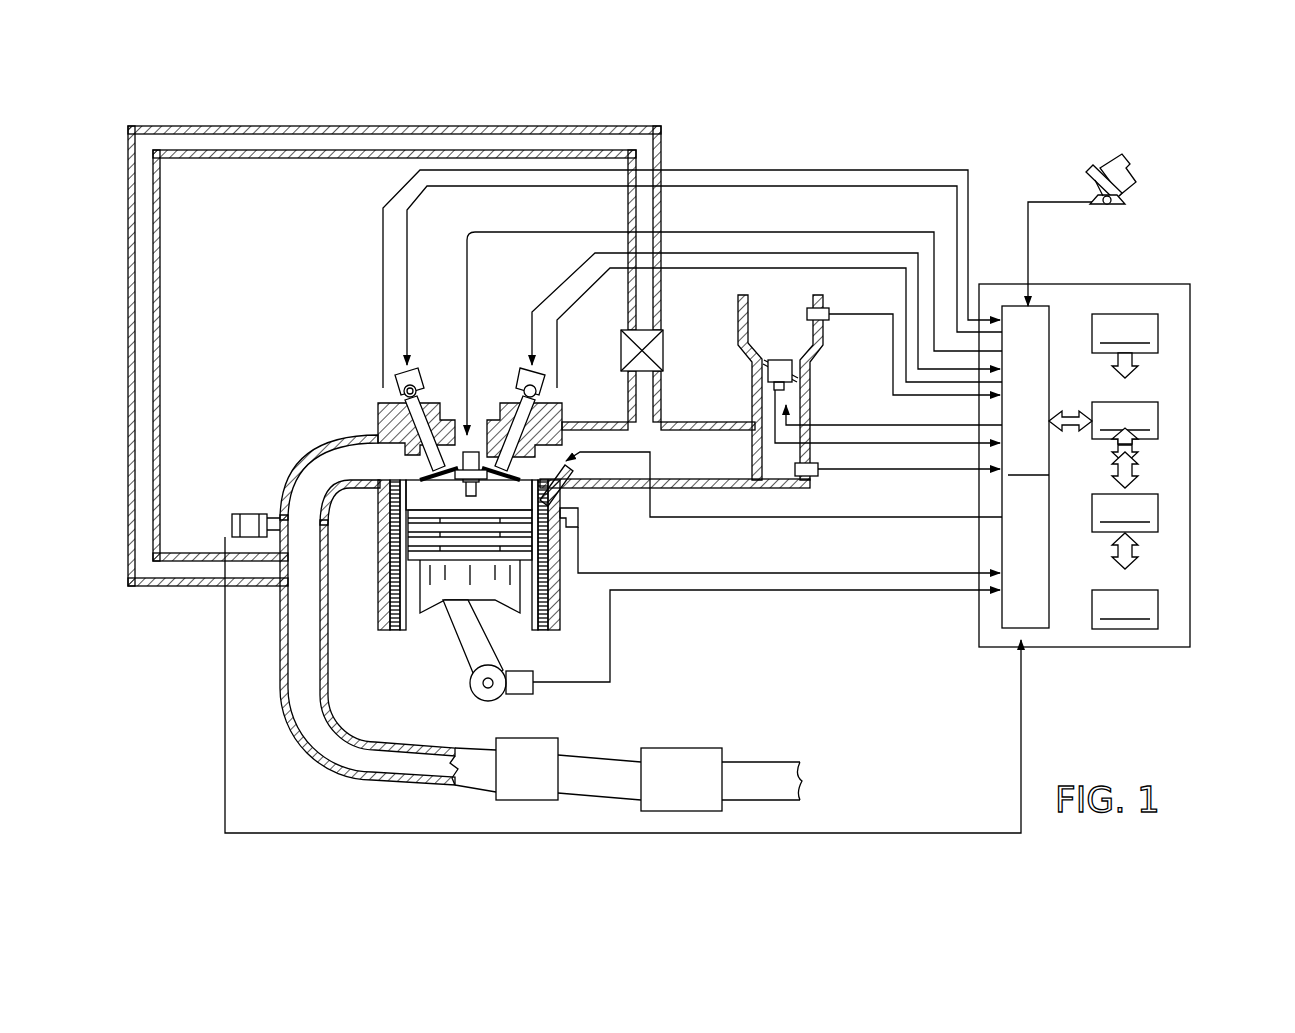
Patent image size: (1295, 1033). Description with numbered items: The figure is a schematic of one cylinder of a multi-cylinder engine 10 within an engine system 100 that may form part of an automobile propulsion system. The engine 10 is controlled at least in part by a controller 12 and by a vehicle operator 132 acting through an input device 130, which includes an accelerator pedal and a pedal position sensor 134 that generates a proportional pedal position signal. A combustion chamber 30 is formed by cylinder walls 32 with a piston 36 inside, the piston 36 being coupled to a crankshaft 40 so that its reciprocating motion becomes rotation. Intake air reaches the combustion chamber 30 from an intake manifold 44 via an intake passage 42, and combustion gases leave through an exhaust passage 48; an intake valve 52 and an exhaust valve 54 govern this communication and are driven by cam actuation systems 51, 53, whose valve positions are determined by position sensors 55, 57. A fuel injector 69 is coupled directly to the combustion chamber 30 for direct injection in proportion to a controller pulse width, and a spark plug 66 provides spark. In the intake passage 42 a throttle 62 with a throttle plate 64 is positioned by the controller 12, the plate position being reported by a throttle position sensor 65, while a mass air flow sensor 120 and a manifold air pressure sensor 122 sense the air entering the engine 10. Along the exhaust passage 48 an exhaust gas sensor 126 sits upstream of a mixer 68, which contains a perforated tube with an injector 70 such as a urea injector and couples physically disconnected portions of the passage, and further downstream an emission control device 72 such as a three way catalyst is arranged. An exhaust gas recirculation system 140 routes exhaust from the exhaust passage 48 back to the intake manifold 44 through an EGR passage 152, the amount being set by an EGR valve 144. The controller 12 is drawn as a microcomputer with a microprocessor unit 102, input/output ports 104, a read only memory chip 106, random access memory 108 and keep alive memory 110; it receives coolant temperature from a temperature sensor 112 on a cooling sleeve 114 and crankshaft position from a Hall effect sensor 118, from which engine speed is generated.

The engine 10 is at (316, 360).
The controller 12 is at (1192, 284).
The combustion chamber 30 is at (440, 520).
The cylinder walls 32 is at (418, 635).
The piston 36 is at (455, 602).
The crankshaft 40 is at (482, 700).
The intake passage 42 is at (790, 339).
The intake manifold 44 is at (727, 469).
The exhaust passage 48 is at (359, 473).
The cam actuation system 51 is at (522, 372).
The intake valve 52 is at (770, 483).
The cam actuation system 53 is at (411, 372).
The exhaust valve 54 is at (412, 445).
The position sensor 55 is at (545, 388).
The position sensor 57 is at (400, 383).
The throttle 62 is at (800, 376).
The throttle plate 64 is at (768, 370).
The throttle position sensor 65 is at (774, 388).
The spark plug 66 is at (477, 440).
The mixer 68 is at (540, 782).
The fuel injector 69 is at (562, 497).
The injector 70 is at (562, 748).
The emission control device 72 is at (694, 790).
The engine system 100 is at (1222, 100).
The microprocessor unit 102 is at (1160, 418).
The input/output ports 104 is at (1052, 310).
The read only memory chip 106 is at (1160, 332).
The random access memory 108 is at (1160, 510).
The keep alive memory 110 is at (1160, 606).
The temperature sensor 112 is at (578, 530).
The cooling sleeve 114 is at (548, 592).
The Hall effect sensor 118 is at (525, 696).
The mass air flow sensor 120 is at (824, 306).
The manifold air pressure sensor 122 is at (818, 476).
The exhaust gas sensor 126 is at (232, 518).
The input device 130 is at (1090, 178).
The vehicle operator 132 is at (1140, 166).
The pedal position sensor 134 is at (1125, 203).
The exhaust gas recirculation system 140 is at (532, 112).
The EGR valve 144 is at (664, 355).
The EGR passage 152 is at (386, 127).